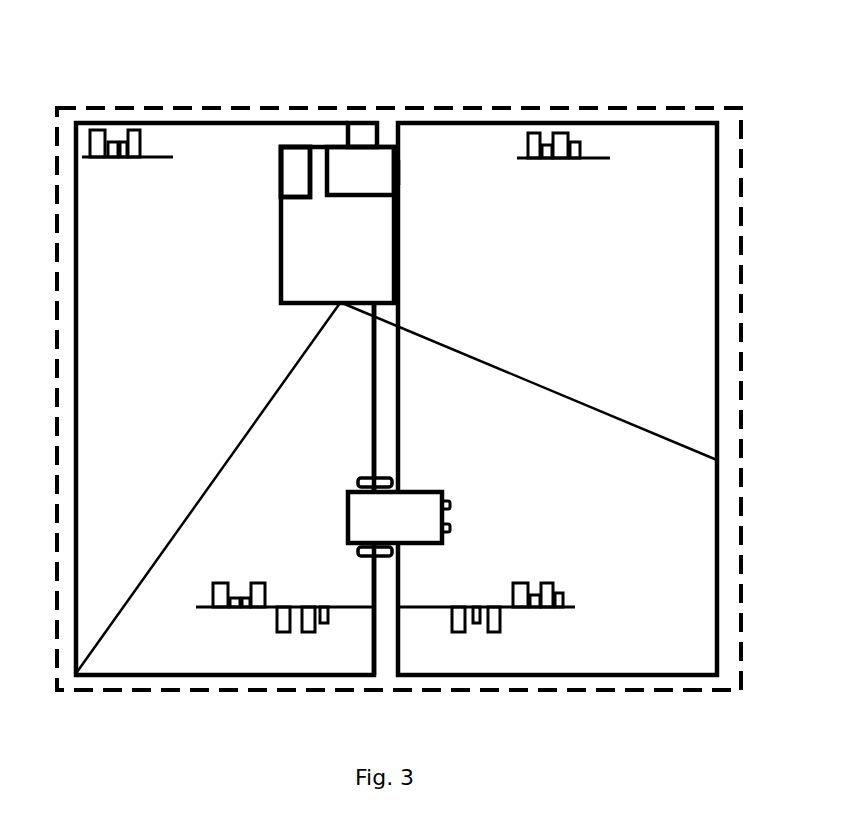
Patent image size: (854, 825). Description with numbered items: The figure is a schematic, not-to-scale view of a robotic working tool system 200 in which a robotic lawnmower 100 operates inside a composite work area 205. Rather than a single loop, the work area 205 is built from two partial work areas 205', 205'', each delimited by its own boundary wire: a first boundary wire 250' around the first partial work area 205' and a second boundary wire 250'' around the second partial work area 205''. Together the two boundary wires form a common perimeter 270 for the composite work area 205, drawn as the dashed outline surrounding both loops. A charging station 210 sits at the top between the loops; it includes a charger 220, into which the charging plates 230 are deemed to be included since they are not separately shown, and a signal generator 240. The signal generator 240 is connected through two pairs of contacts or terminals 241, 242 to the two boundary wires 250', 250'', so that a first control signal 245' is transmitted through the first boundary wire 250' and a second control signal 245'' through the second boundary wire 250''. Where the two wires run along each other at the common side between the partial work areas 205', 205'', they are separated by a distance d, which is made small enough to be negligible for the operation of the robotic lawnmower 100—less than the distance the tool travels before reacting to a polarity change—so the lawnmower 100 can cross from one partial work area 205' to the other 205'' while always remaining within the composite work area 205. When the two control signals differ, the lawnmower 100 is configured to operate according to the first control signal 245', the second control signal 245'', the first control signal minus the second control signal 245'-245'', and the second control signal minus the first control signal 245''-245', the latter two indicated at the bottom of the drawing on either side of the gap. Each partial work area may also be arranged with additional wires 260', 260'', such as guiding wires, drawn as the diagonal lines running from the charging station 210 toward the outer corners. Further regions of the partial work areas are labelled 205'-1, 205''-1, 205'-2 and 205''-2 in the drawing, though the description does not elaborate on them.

The robotic lawnmower 100 is at (399, 489).
The robotic working tool system 200 is at (175, 78).
The work area 205 is at (385, 697).
The first partial work area 205' is at (262, 345).
The second partial work area 205'' is at (479, 332).
The first light path lower portion 205'-1 is at (305, 502).
The second light path lower portion 205''-1 is at (527, 503).
The first light path reflected portion 205'-2 is at (155, 419).
The second light path reflected portion 205''-2 is at (601, 297).
The charging station 210 is at (337, 225).
The charger 220 is at (278, 173).
The charging plates 230 is at (256, 184).
The signal generator 240 is at (360, 171).
The first pair of contacts or terminals 241 is at (340, 135).
The second pair of contacts or terminals 242 is at (410, 168).
The first control signal 245' is at (139, 143).
The second control signal 245'' is at (576, 146).
The first control signal minus second control signal 245'-245'' is at (284, 607).
The second control signal minus first control signal 245''-245' is at (487, 607).
The first boundary wire 250' is at (214, 358).
The second boundary wire 250'' is at (557, 359).
The additional wire 260' is at (208, 487).
The additional wire 260'' is at (529, 401).
The common perimeter 270 is at (600, 108).
The distance between adjacent boundary wires d is at (385, 652).